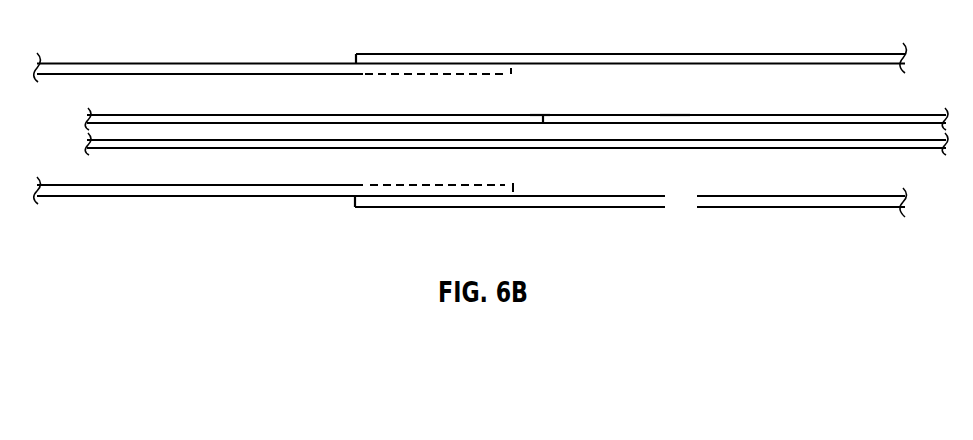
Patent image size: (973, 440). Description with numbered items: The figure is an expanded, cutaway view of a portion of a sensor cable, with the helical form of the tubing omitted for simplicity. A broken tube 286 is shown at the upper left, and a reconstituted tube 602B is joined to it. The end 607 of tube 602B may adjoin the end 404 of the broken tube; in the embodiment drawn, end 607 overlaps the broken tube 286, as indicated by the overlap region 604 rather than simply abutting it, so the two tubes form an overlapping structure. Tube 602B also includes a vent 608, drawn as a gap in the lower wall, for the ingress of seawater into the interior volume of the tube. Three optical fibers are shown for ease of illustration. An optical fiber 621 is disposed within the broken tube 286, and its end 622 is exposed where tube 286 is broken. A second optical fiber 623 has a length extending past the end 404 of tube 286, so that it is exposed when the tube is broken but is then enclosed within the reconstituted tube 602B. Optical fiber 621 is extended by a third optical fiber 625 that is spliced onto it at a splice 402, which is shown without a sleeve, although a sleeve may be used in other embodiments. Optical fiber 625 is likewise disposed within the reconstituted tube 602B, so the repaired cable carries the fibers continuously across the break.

The broken tube 286 is at (173, 63).
The tube 602B is at (595, 54).
The end of tube 607 is at (356, 54).
The overlap region 604 is at (442, 90).
The optical fiber 621 is at (140, 115).
The second optical fiber 623 is at (190, 150).
The end of optical fiber 622 is at (539, 110).
The third optical fiber 625 is at (673, 113).
The splice 402 is at (543, 116).
The end of broken tube 404 is at (513, 191).
The vent 608 is at (680, 201).